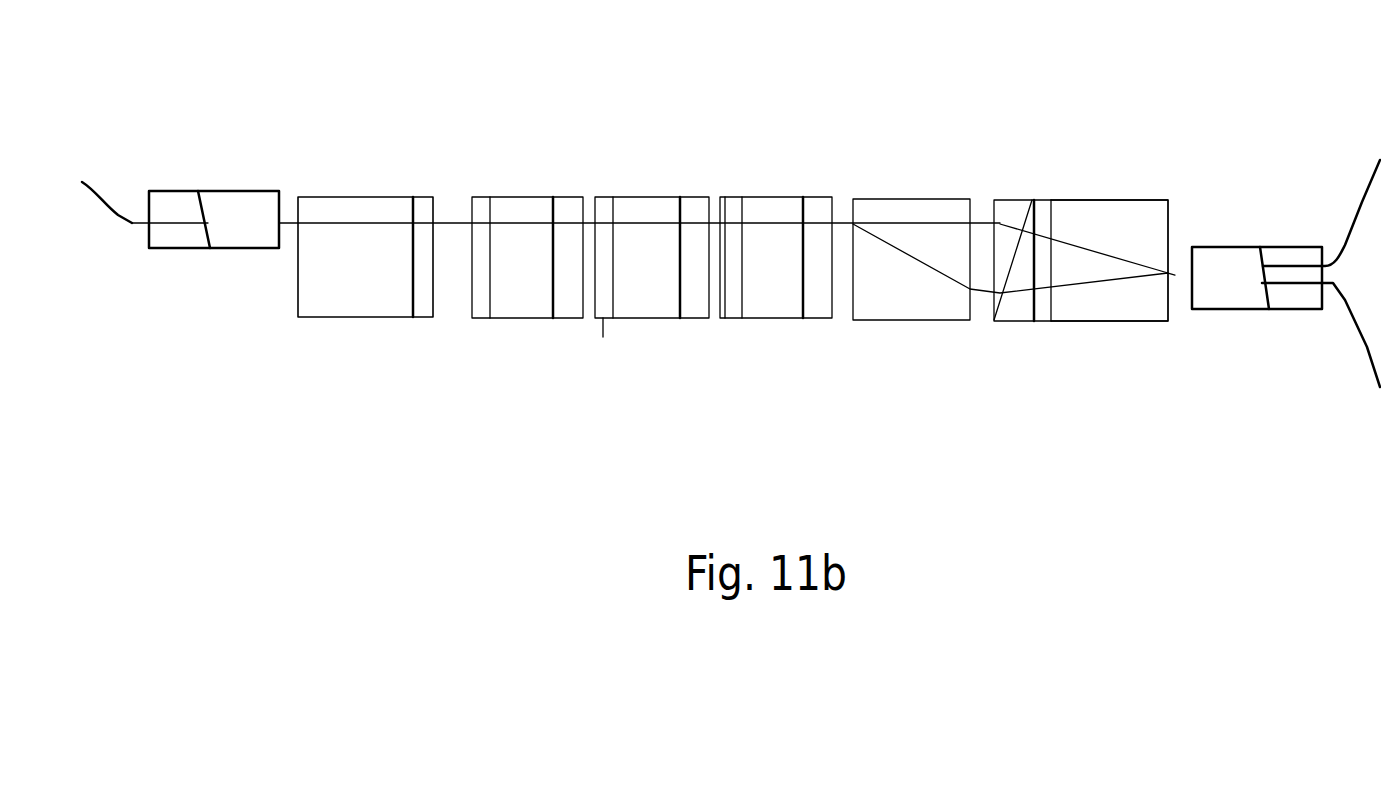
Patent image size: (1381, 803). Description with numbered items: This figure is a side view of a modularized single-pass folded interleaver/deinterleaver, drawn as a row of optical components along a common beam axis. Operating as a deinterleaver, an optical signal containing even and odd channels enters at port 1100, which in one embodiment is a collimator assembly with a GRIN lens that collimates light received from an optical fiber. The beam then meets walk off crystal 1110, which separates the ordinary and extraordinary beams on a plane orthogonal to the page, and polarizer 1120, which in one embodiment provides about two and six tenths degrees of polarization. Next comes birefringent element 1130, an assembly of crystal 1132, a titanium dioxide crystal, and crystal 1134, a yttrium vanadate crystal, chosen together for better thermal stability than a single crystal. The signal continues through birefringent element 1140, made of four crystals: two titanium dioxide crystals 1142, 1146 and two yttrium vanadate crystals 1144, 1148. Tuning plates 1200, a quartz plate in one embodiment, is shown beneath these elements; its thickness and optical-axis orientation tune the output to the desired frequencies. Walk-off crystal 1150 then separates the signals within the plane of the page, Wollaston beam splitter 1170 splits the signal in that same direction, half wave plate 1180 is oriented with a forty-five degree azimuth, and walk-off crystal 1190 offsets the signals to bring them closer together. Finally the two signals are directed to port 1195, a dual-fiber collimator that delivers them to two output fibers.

The port 1100 is at (230, 202).
The walk off crystal 1110 is at (355, 318).
The polarizer 1120 is at (424, 318).
The birefringent element 1130 is at (577, 392).
The crystal 1132 is at (568, 197).
The crystal 1134 is at (512, 197).
The birefringent element 1140 is at (825, 384).
The TiO2 crystal 1142 is at (696, 197).
The YVO4 crystal 1144 is at (637, 197).
The TiO2 crystal 1146 is at (818, 197).
The YVO4 crystal 1148 is at (781, 186).
The walk-off crystal 1150 is at (913, 320).
The Wollaston beam splitter 1170 is at (992, 321).
The half wave plate 1180 is at (1058, 190).
The walk-off crystal 1190 is at (1110, 321).
The port 1195 is at (1260, 247).
The tuning plates 1200 is at (733, 319).